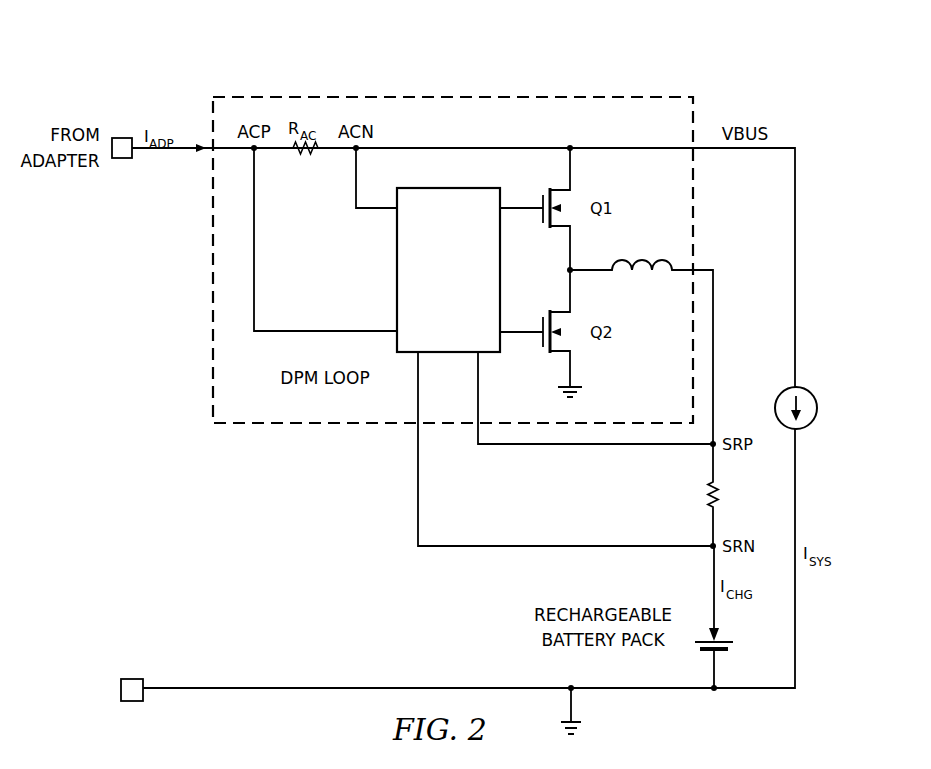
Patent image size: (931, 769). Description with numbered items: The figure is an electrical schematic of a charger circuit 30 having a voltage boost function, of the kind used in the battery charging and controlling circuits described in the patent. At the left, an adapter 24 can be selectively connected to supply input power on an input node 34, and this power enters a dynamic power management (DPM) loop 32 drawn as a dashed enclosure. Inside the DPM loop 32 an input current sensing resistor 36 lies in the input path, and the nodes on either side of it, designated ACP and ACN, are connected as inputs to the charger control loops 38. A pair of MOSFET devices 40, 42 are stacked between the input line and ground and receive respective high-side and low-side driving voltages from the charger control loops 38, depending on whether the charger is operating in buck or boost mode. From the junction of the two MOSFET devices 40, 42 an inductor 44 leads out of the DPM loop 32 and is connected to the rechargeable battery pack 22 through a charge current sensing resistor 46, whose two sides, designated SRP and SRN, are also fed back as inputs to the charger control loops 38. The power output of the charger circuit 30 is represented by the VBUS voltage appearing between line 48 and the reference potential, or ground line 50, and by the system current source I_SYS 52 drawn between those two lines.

The rechargeable battery pack 22 is at (700, 652).
The adapter 24 is at (62, 176).
The charger circuit 30 is at (656, 70).
The dynamic power management (DPM) circuit 32 is at (213, 348).
The input node 34 is at (121, 137).
The input current sensing resistor 36 is at (306, 160).
The charger control loops 38 is at (460, 323).
The MOSFET device 40 is at (542, 198).
The MOSFET device 42 is at (542, 346).
The inductor 44 is at (643, 275).
The charge current sensing resistor 46 is at (720, 497).
The line 48 is at (745, 152).
The ground line 50 is at (753, 691).
The current source I_SYS 52 is at (818, 406).